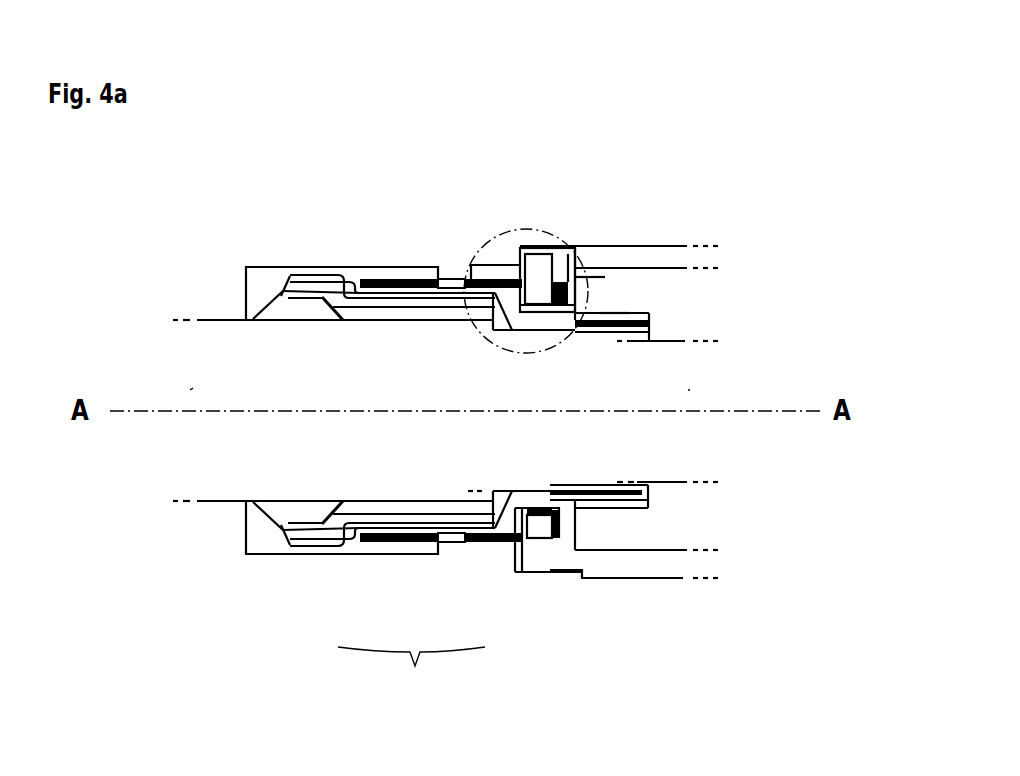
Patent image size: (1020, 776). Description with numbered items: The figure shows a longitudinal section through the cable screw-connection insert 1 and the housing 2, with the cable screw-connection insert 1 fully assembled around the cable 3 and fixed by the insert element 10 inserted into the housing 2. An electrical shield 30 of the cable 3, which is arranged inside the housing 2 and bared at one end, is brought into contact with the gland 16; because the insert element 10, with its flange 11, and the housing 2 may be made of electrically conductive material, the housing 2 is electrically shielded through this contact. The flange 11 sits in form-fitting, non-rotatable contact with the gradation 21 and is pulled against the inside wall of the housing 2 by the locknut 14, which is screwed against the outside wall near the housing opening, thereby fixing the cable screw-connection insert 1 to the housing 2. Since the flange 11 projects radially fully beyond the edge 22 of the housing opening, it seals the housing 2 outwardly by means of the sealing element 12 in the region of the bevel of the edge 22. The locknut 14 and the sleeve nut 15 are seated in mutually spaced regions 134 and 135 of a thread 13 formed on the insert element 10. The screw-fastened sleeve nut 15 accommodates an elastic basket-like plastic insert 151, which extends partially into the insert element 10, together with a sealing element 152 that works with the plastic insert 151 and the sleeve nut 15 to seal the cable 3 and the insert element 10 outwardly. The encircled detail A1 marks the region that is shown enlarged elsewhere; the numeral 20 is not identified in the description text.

The cable screw-connection insert 1 is at (247, 150).
The housing 2 is at (722, 154).
The cable 3 is at (193, 388).
The insert element 10 is at (455, 280).
The flange 11 is at (573, 287).
The sealing element 12 is at (550, 247).
The thread 13 is at (411, 677).
The locknut 14 is at (471, 265).
The sleeve nut 15 is at (280, 286).
The gland 16 is at (614, 318).
The circuit board 20 is at (660, 257).
The gradation 21 is at (563, 575).
The edge 22 is at (514, 548).
The electrical shield 30 is at (650, 320).
The region of the thread 134 is at (456, 547).
The region of the thread 135 is at (398, 549).
The plastic insert 151 is at (327, 268).
The sealing element 152 is at (280, 298).
The detail A1 is at (493, 240).